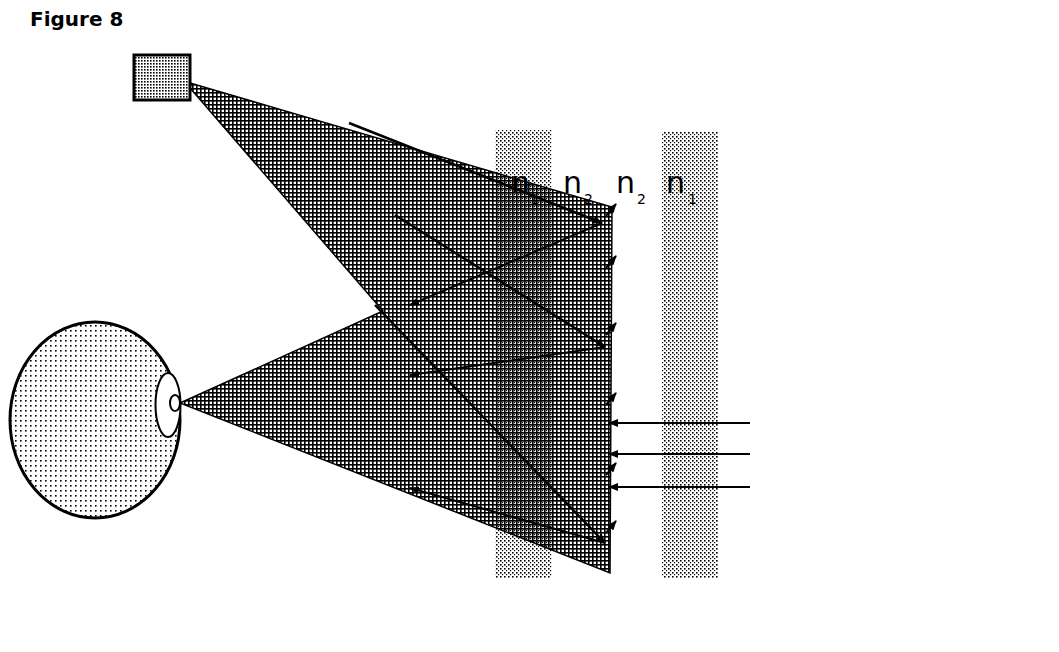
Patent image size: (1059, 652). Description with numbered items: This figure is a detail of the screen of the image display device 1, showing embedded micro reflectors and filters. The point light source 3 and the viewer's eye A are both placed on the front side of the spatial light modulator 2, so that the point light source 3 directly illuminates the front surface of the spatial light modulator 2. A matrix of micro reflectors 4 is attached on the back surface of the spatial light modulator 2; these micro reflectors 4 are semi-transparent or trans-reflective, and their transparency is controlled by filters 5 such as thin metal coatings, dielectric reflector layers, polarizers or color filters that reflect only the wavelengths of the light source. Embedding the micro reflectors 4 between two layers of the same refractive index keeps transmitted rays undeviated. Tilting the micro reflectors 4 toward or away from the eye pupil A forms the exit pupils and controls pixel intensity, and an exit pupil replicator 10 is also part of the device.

The image display device 1 is at (757, 143).
The spatial light modulator 2 is at (522, 560).
The point light source 3 is at (147, 85).
The micro reflector 4 is at (582, 560).
The filter 5 is at (577, 137).
The exit pupil replicator 10 is at (607, 498).
The viewer's eye A is at (166, 451).